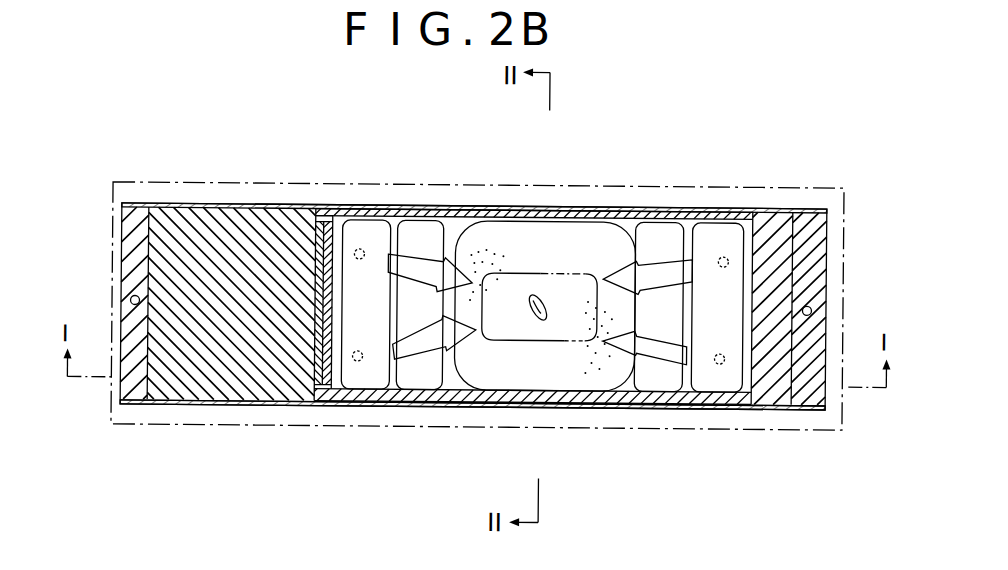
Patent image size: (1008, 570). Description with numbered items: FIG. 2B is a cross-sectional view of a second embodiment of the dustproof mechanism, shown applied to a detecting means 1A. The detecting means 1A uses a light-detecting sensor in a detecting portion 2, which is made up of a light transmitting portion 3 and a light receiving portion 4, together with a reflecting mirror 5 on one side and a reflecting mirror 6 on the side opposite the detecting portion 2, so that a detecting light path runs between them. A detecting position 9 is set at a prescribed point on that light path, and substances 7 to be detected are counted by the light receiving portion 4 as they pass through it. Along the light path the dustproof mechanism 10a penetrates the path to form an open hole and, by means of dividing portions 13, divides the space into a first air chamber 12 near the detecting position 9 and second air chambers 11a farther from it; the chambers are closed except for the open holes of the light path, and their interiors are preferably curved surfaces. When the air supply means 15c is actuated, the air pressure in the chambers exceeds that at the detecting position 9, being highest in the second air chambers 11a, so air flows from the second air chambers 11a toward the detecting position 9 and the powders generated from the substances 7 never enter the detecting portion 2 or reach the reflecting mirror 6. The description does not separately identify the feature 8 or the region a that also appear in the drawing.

The detecting means 1A is at (239, 165).
The detecting portion 2 is at (187, 207).
The light transmitting portion 3 is at (305, 408).
The light receiving portion 4 is at (306, 209).
The reflecting mirror 5 is at (326, 209).
The reflecting mirror 6 is at (782, 238).
The substances to be detected 7 is at (540, 273).
The scattered light 8 is at (493, 238).
The detecting position 9 is at (590, 234).
The dustproof mechanism 10a is at (385, 209).
The second air chamber 11a is at (356, 408).
The first air chamber 12 is at (468, 388).
The dividing portion 13 is at (424, 380).
The air supply means 15c is at (752, 198).
The intermediate chamber a is at (445, 209).